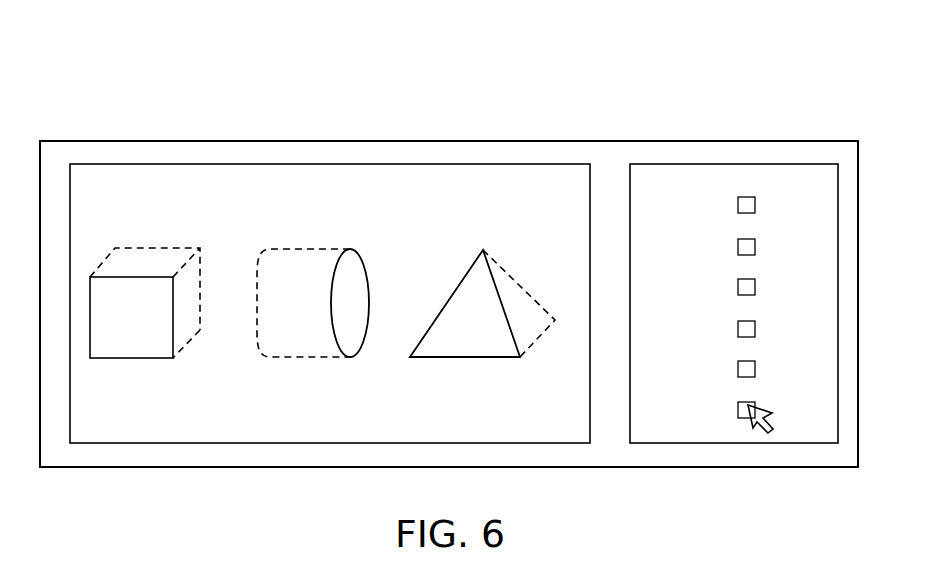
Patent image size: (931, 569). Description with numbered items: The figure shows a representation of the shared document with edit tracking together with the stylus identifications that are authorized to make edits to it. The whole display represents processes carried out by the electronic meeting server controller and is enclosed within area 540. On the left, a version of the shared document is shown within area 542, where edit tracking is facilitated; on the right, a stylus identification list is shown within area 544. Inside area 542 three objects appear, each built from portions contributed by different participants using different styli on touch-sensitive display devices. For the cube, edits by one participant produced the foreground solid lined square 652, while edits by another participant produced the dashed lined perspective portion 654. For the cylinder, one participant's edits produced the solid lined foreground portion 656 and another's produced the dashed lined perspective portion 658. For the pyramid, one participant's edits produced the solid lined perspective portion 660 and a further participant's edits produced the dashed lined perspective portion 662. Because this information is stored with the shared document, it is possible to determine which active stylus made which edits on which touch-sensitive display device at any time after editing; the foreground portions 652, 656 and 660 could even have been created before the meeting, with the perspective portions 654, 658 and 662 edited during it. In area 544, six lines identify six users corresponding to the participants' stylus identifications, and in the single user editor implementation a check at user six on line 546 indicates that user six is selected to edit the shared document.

The area 540 is at (552, 141).
The area 542 is at (225, 428).
The area 544 is at (792, 443).
The line 546 is at (762, 411).
The foreground solid lined square portion 652 is at (136, 358).
The dashed lined perspective portion 654 is at (190, 343).
The solid lined foreground portion 656 is at (356, 355).
The dashed lined perspective portion 658 is at (313, 357).
The solid lined perspective portion 660 is at (472, 357).
The dashed lined perspective portion 662 is at (533, 343).